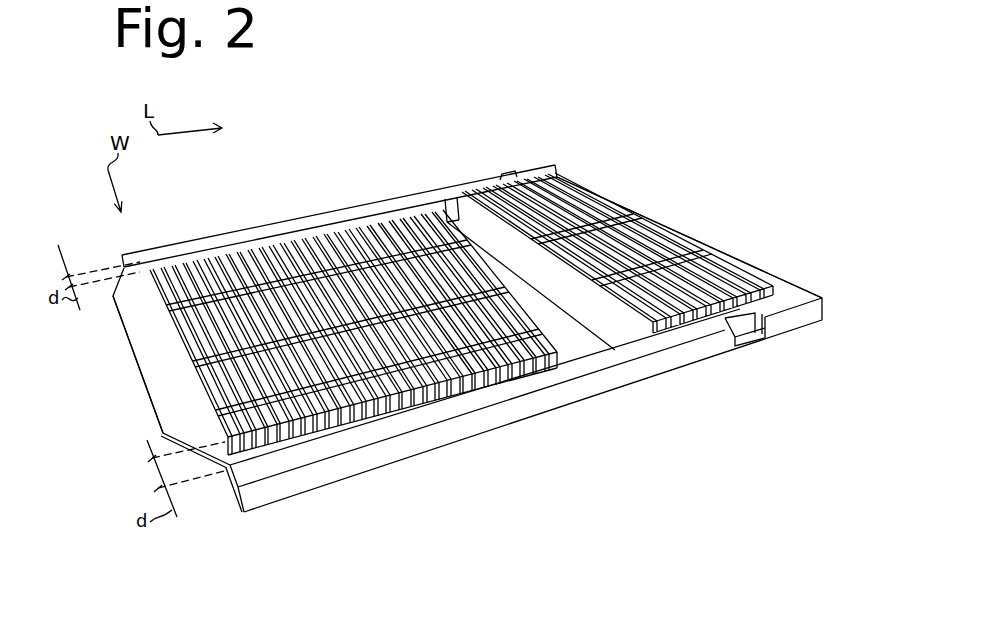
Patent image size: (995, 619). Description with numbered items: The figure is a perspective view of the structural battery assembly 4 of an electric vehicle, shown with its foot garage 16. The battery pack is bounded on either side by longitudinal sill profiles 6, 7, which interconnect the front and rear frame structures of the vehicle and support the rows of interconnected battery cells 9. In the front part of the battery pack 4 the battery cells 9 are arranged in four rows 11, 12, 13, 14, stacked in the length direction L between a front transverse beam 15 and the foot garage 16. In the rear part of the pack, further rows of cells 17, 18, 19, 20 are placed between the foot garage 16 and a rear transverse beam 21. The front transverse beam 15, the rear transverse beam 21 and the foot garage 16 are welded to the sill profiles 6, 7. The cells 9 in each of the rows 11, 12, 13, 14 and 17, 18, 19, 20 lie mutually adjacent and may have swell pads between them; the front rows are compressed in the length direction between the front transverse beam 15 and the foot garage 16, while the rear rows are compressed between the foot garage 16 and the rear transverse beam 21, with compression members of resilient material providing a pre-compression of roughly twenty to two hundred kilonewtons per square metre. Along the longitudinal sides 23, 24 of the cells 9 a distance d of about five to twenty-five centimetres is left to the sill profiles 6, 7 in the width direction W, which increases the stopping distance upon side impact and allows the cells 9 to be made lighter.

The structural battery assembly 4 is at (88, 238).
The longitudinal sill profile 6 is at (245, 230).
The longitudinal sill profile 7 is at (553, 397).
The battery cells 9 is at (433, 372).
The row of battery cells 11 is at (160, 298).
The row of battery cells 12 is at (185, 338).
The row of battery cells 13 is at (213, 377).
The row of battery cells 14 is at (227, 413).
The front transverse beam 15 is at (152, 372).
The foot garage 16 is at (435, 232).
The row of battery cells 17 is at (580, 200).
The row of battery cells 18 is at (628, 217).
The row of battery cells 19 is at (683, 253).
The row of battery cells 20 is at (730, 287).
The rear transverse beam 21 is at (680, 230).
The longitudinal side of the cells 23 is at (393, 407).
The longitudinal side of the cells 24 is at (287, 220).